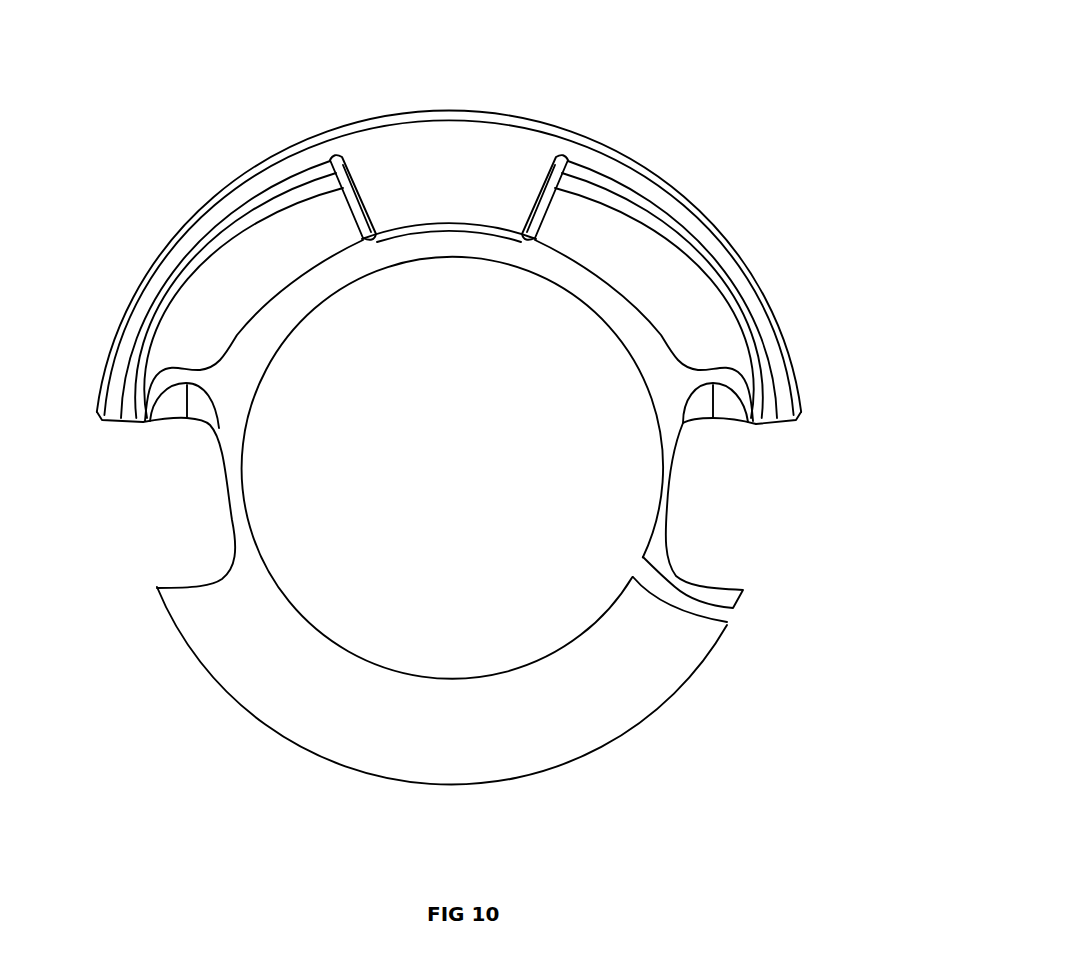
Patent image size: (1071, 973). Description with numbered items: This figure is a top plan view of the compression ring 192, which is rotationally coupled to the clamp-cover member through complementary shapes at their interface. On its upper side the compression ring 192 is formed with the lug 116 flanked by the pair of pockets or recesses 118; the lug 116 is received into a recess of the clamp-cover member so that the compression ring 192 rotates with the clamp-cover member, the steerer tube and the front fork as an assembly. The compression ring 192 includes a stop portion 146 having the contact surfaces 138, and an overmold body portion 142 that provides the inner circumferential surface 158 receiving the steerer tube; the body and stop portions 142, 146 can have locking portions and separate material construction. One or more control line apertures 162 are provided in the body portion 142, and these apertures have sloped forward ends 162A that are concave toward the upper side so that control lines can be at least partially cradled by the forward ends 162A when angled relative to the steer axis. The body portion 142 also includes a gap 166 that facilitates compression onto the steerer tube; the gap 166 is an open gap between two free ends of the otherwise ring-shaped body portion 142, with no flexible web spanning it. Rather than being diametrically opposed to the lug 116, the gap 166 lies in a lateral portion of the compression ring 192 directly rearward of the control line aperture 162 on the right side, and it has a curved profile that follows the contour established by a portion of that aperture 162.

The compression ring 192 is at (718, 95).
The lug 116 is at (448, 150).
The stop portion 146 is at (558, 132).
The pockets or recesses 118 is at (262, 267).
The contact surfaces 138 is at (118, 423).
The sloped forward ends 162A is at (200, 400).
The control line apertures 162 is at (213, 573).
The inner circumferential surface 158 is at (522, 665).
The overmold body portion 142 is at (325, 667).
The gap 166 is at (698, 608).